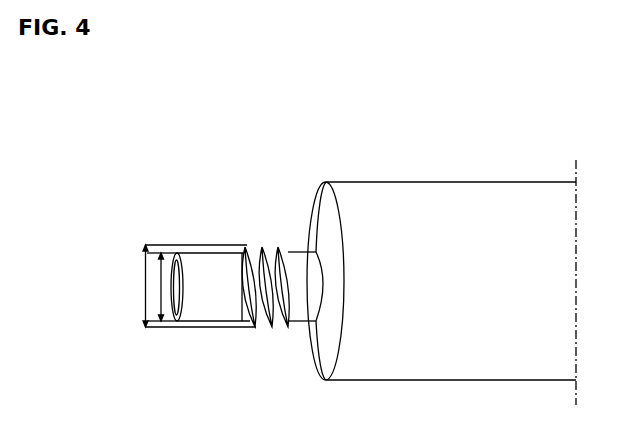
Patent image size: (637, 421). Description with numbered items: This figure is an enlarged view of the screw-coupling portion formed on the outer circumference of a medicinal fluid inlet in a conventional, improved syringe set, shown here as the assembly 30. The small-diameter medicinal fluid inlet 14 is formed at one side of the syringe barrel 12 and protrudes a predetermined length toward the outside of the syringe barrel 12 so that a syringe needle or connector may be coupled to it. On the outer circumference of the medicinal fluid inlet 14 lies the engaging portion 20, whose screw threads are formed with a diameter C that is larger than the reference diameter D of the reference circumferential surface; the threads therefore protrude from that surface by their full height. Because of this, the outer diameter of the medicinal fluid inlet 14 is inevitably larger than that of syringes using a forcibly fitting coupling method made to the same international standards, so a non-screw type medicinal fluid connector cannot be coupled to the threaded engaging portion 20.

The fastening screw 30 is at (160, 77).
The syringe barrel 12 is at (432, 187).
The medicinal fluid inlet 14 is at (210, 263).
The engaging portion 20 is at (291, 251).